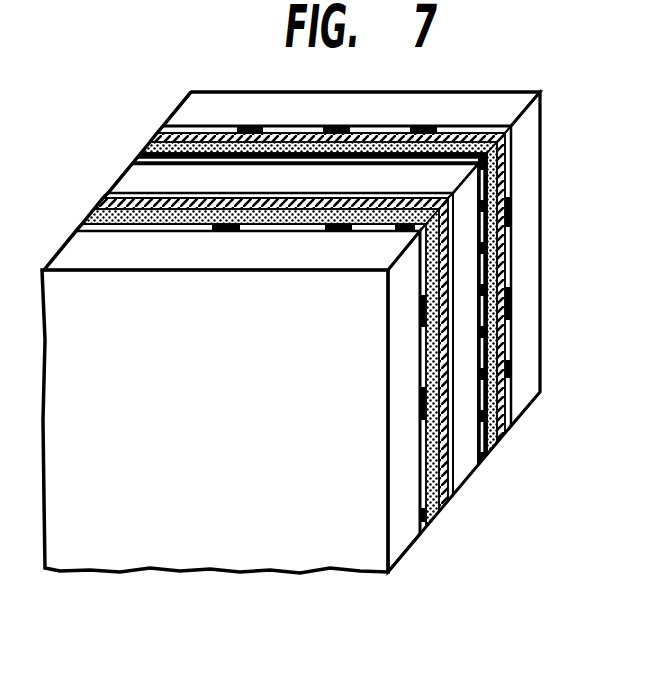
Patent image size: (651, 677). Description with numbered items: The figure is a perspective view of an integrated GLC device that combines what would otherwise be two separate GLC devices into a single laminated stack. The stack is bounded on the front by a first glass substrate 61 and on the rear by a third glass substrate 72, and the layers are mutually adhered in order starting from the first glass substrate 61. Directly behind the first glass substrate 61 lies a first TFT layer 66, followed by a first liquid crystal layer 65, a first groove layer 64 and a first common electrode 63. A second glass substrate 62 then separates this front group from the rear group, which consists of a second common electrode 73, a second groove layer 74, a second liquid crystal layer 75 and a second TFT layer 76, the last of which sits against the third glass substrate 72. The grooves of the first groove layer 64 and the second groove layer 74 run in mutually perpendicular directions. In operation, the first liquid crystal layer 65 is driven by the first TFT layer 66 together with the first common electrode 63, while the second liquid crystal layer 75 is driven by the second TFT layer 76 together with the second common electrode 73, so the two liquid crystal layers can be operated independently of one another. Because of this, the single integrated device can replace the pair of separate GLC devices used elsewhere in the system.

The first glass substrate 61 is at (330, 560).
The second glass substrate 62 is at (127, 175).
The first common electrode 63 is at (452, 493).
The first groove layer 64 is at (445, 503).
The first liquid crystal layer 65 is at (435, 510).
The first TFT layer 66 is at (425, 523).
The third glass substrate 72 is at (185, 103).
The second common electrode 73 is at (485, 460).
The second groove layer 74 is at (493, 450).
The second liquid crystal layer 75 is at (503, 432).
The second TFT layer 76 is at (517, 410).